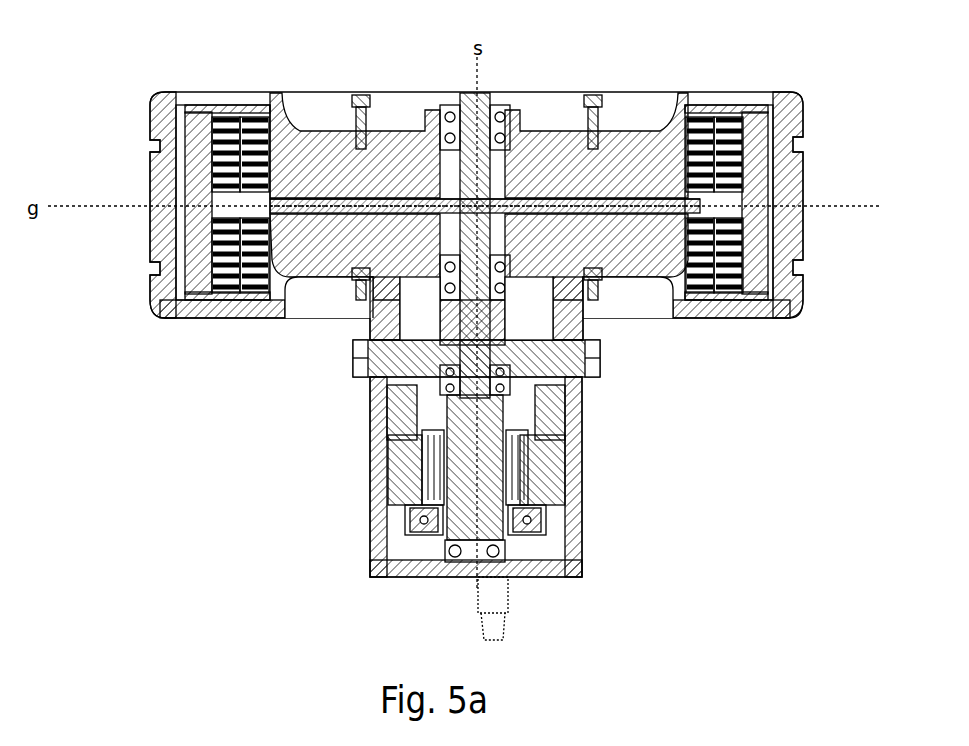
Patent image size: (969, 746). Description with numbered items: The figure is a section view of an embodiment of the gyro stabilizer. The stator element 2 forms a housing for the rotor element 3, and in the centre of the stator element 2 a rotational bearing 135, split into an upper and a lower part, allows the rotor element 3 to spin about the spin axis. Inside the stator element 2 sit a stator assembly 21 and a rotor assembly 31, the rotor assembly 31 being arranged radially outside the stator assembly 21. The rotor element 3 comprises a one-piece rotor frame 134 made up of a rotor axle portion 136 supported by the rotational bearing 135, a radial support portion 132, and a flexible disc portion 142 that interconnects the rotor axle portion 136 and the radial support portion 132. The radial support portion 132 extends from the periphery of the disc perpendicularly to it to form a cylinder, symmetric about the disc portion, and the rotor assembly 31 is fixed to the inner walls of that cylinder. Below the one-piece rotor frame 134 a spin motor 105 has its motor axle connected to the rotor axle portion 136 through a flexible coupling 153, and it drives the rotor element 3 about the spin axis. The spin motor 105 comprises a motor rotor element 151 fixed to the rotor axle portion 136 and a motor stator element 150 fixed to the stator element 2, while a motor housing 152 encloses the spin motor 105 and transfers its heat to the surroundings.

The stator element 2 is at (230, 195).
The rotor element 3 is at (197, 118).
The stator assembly 21 is at (703, 113).
The rotor assembly 31 is at (730, 117).
The spin motor 105 is at (383, 440).
The radial support portion 132 is at (185, 127).
The one-piece rotor frame 134 is at (282, 203).
The flexible disc portion 142 is at (282, 203).
The rotational bearing 135 is at (500, 293).
The rotor axle portion 136 is at (455, 308).
The motor stator element 150 is at (420, 485).
The motor rotor element 151 is at (537, 503).
The motor housing 152 is at (577, 478).
The flange coupling 153 is at (492, 348).